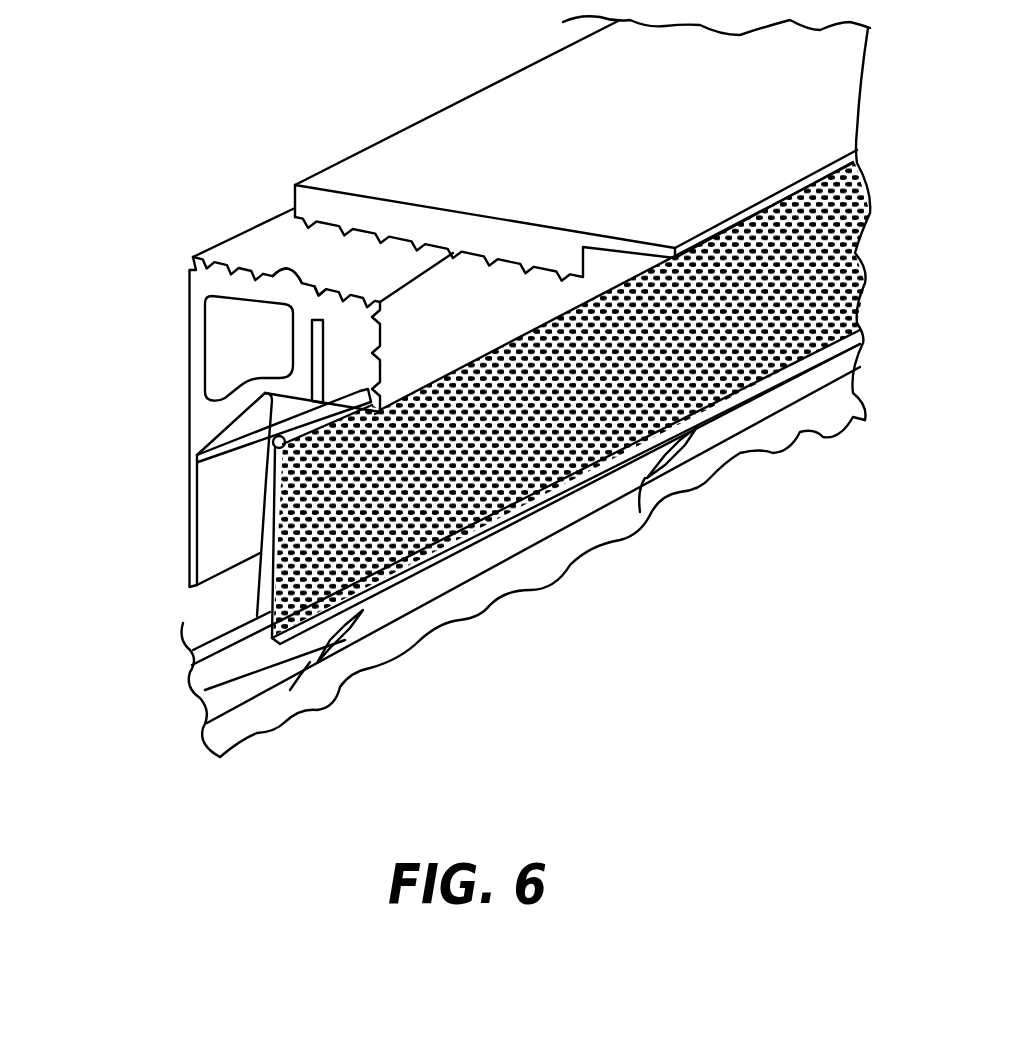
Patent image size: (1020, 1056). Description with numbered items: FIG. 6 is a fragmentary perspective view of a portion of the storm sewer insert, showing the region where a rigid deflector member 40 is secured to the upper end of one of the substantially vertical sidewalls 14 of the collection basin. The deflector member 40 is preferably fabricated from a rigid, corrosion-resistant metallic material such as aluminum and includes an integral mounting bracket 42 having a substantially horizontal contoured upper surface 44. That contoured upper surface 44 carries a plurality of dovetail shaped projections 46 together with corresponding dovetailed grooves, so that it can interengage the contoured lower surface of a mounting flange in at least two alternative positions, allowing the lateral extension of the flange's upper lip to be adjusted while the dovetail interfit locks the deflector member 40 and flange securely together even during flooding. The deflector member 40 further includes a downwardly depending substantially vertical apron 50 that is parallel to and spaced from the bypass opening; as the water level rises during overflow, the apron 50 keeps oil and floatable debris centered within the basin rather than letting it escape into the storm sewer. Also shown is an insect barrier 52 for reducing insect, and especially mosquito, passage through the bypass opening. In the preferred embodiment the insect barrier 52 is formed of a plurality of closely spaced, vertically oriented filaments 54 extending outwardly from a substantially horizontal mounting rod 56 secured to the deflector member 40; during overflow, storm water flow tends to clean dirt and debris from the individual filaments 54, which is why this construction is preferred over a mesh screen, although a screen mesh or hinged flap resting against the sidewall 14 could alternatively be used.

The substantially vertical sidewalls 14 is at (597, 527).
The rigid deflector member 40 is at (250, 345).
The integral mounting bracket 42 is at (222, 225).
The horizontal contoured upper surface 44 is at (280, 262).
The dovetail shaped projections 46 is at (325, 277).
The downwardly depending substantially vertical apron 50 is at (190, 523).
The insect barrier 52 is at (498, 488).
The filaments 54 is at (368, 575).
The horizontal mounting rod 56 is at (197, 458).